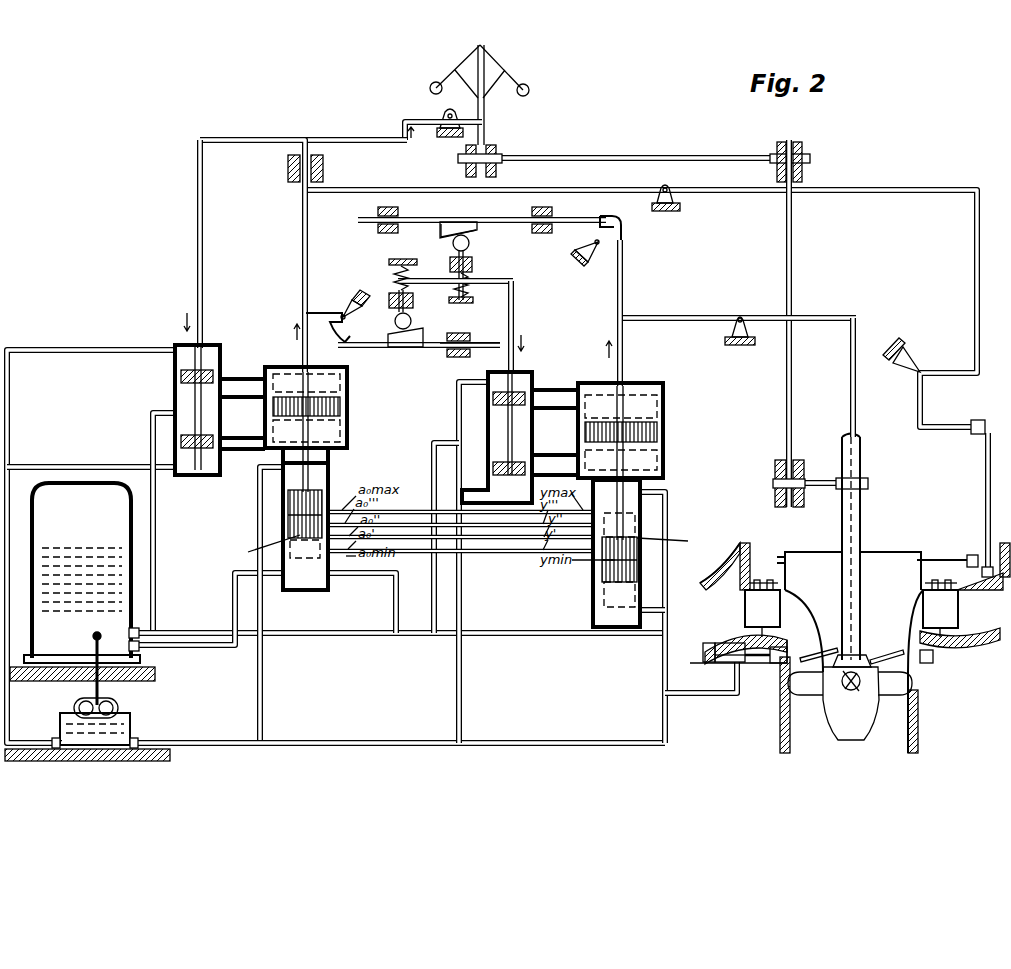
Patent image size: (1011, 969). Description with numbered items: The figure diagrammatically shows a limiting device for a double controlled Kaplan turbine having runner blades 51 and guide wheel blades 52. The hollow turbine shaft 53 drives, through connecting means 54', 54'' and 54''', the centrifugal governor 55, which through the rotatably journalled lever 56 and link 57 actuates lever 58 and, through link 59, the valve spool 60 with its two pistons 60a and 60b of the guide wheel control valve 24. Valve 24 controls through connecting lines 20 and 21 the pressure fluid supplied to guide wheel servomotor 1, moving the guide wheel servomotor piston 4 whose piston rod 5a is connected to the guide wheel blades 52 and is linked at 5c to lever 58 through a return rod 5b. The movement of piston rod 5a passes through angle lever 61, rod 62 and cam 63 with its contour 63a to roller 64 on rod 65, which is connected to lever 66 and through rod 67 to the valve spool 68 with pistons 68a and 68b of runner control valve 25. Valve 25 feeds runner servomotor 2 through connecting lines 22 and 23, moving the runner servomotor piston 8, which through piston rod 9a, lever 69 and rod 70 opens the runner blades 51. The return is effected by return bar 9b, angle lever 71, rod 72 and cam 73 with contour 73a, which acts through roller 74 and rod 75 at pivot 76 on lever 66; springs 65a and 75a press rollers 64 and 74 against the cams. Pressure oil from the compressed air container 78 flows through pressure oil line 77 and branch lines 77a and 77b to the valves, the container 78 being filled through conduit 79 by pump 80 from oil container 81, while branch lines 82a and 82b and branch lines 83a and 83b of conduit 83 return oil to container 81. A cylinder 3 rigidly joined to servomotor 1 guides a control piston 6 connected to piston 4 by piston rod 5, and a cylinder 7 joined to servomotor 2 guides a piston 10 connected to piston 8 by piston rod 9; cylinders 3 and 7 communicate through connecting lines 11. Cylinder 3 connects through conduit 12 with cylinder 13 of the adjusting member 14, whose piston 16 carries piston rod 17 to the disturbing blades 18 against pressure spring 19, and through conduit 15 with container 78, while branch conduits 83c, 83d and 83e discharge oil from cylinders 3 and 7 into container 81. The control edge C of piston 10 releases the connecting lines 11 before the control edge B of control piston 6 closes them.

The guide wheel servomotor 1 is at (348, 434).
The runner servomotor 2 is at (665, 403).
The cylinder 3 is at (332, 465).
The guide wheel servomotor piston 4 is at (348, 406).
The piston rod 5 is at (288, 487).
The piston rod 5a is at (303, 249).
The return rod 5b is at (305, 179).
The link point 5c is at (303, 142).
The control piston 6 is at (300, 528).
The cylinder 7 is at (593, 618).
The runner servomotor piston 8 is at (640, 436).
The piston rod 9 is at (665, 466).
The piston rod 9a is at (624, 352).
The return bar 9b is at (624, 272).
The piston 10 is at (627, 574).
The connecting lines 11 is at (460, 525).
The conduit 12 is at (393, 608).
The cylinder 13 is at (704, 662).
The adjusting member 14 is at (730, 662).
The conduit 15 is at (233, 596).
The piston 16 is at (730, 639).
The piston rod 17 is at (758, 660).
The disturbing blades 18 is at (786, 650).
The pressure spring 19 is at (703, 648).
The connecting line 20 is at (244, 377).
The connecting line 21 is at (242, 442).
The connecting line 22 is at (553, 394).
The connecting line 23 is at (555, 464).
The guide wheel control valve 24 is at (186, 398).
The runner control valve 25 is at (497, 412).
The runner blades 51 is at (806, 686).
The guide wheel blades 52 is at (950, 608).
The hollow turbine shaft 53 is at (862, 533).
The connecting means 54' is at (820, 473).
The connecting means 54'' is at (813, 323).
The connecting means 54''' is at (634, 147).
The centrifugal governor 55 is at (470, 70).
The rotatably journalled lever 56 is at (416, 121).
The link 57 is at (402, 125).
The lever 58 is at (330, 138).
The link 59 is at (198, 224).
The valve spool 60 is at (218, 398).
The piston 60a is at (180, 377).
The piston 60b is at (200, 460).
The angle lever 61 is at (323, 311).
The rod 62 is at (366, 348).
The cam 63 is at (420, 348).
The curve contour 63a is at (398, 340).
The roller 64 is at (412, 318).
The rod 65 is at (395, 292).
The spring 65a is at (393, 273).
The lever 66 is at (432, 280).
The rod 67 is at (515, 321).
The valve spool 68 is at (503, 430).
The piston 68a is at (531, 405).
The piston 68b is at (492, 468).
The lever 69 is at (700, 316).
The rod 70 is at (856, 380).
The angle lever 71 is at (623, 225).
The rod 72 is at (507, 218).
The cam 73 is at (453, 228).
The curve contour 73a is at (445, 236).
The roller 74 is at (470, 245).
The rod 75 is at (466, 276).
The spring 75a is at (466, 295).
The pivot 76 is at (466, 268).
The pressure oil line 77 is at (140, 628).
The branch line 77a is at (157, 542).
The branch line 77b is at (178, 631).
The compressed air container 78 is at (45, 513).
The conduit 79 is at (100, 692).
The pump 80 is at (119, 713).
The oil container 81 is at (130, 731).
The branch line 82a is at (92, 347).
The branch line 82b is at (92, 464).
The conduit 83 is at (207, 740).
The branch line 83a is at (456, 404).
The branch line 83b is at (483, 488).
The branch conduit 83c is at (263, 690).
The branch conduit 83d is at (669, 517).
The branch conduit 83e is at (655, 617).
The control edge B is at (267, 548).
The control edge C is at (670, 541).